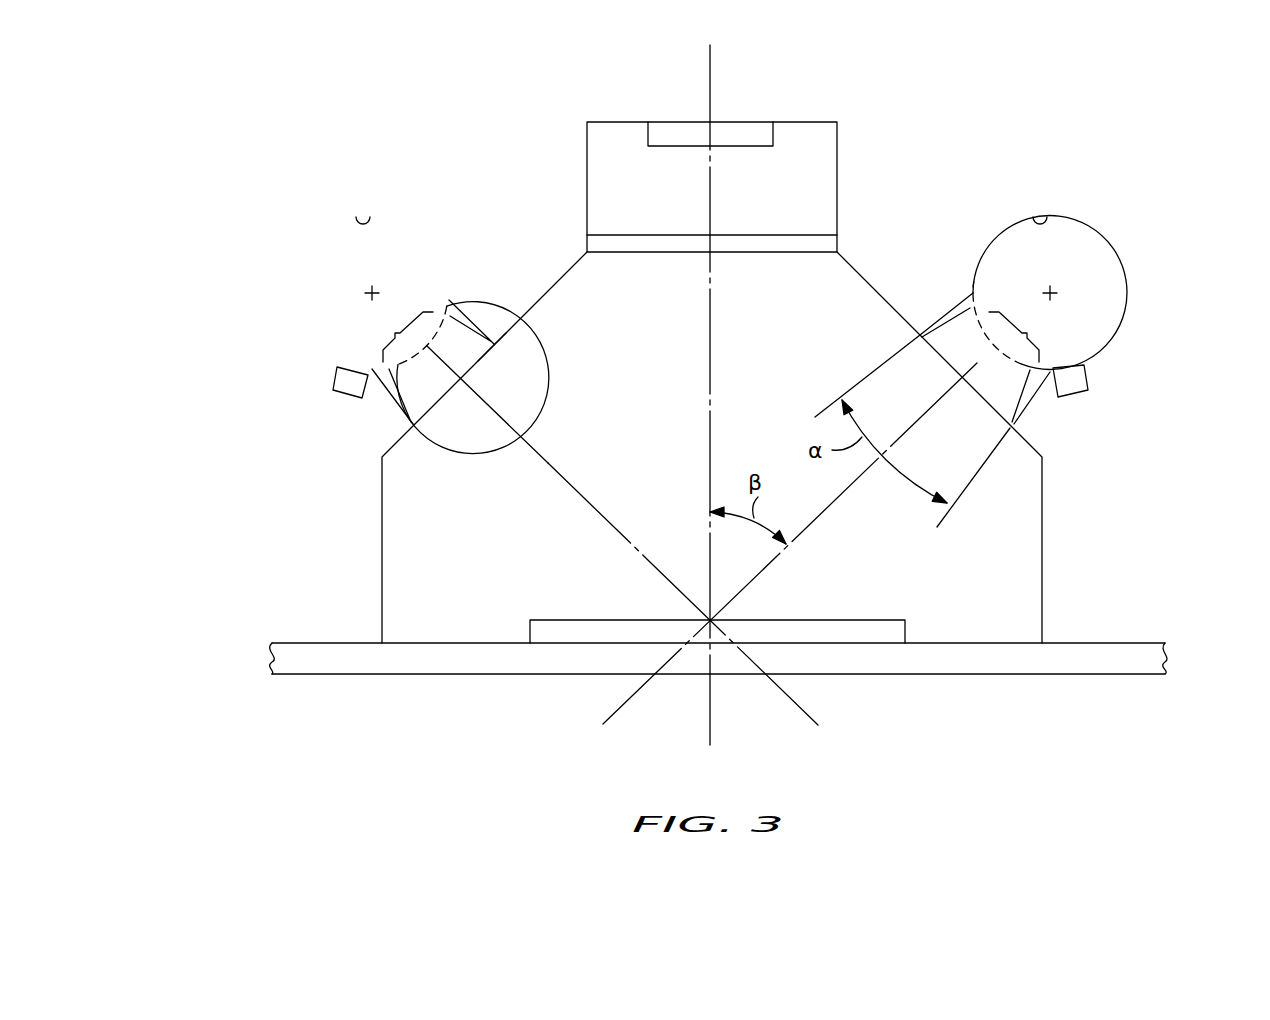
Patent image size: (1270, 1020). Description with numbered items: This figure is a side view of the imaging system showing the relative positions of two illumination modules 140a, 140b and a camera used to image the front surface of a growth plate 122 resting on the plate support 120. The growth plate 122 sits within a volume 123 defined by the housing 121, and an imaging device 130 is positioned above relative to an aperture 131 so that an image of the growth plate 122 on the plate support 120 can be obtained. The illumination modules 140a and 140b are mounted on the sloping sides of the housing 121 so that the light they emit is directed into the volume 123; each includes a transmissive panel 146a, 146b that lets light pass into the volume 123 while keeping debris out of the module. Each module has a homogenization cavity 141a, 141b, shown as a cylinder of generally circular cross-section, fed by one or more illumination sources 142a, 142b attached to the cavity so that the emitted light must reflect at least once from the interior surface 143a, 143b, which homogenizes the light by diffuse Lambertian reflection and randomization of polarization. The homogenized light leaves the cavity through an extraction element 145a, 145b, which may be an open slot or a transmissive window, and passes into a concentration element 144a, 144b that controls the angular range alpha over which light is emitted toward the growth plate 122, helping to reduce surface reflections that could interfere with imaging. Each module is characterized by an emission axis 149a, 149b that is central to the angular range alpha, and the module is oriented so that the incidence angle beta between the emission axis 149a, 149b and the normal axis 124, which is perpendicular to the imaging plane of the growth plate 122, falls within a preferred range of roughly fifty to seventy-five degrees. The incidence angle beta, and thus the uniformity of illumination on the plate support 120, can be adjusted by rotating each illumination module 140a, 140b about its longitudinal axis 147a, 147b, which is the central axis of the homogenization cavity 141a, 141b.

The plate support 120 is at (1113, 660).
The housing 121 is at (1043, 562).
The growth plate 122 is at (886, 628).
The volume 123 is at (403, 541).
The normal axis 124 is at (713, 322).
The imaging device 130 is at (745, 133).
The aperture 131 is at (640, 243).
The illumination module 140a is at (1163, 290).
The illumination module 140b is at (262, 288).
The homogenization cavity 141a is at (997, 235).
The homogenization cavity 141b is at (319, 240).
The illumination source 142a is at (1090, 378).
The illumination source 142b is at (342, 397).
The interior surface 143a is at (1043, 222).
The interior surface 143b is at (370, 222).
The concentration element 144a is at (1030, 407).
The concentration element 144b is at (482, 323).
The extraction element 145a is at (1035, 336).
The extraction element 145b is at (385, 336).
The transmissive panel 146a is at (947, 363).
The transmissive panel 146b is at (488, 350).
The longitudinal axis 147a is at (1053, 290).
The longitudinal axis 147b is at (373, 292).
The emission axis 149a is at (830, 506).
The emission axis 149b is at (642, 558).